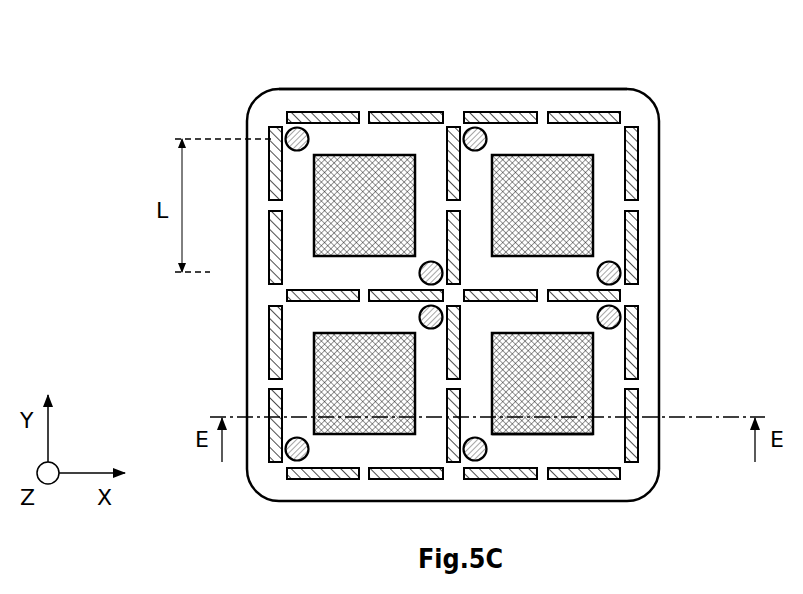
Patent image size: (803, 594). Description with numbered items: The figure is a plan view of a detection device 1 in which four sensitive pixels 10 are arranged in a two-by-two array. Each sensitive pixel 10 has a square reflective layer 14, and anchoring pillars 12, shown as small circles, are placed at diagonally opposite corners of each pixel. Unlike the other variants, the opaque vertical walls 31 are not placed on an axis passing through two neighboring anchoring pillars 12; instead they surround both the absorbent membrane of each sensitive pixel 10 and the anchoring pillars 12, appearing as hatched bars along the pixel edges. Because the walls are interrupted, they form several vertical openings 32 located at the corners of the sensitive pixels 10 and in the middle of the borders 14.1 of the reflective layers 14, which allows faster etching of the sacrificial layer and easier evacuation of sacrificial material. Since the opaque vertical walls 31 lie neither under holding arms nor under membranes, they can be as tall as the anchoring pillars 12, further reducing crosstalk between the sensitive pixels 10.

The detection device 1 is at (287, 65).
The sensitive pixel 10 is at (372, 88).
The anchoring pillar 12 is at (622, 272).
The reflective layer 14 is at (592, 437).
The border of the reflective layer 14.1 is at (540, 434).
The opaque vertical wall 31 is at (638, 162).
The vertical opening 32 is at (638, 208).